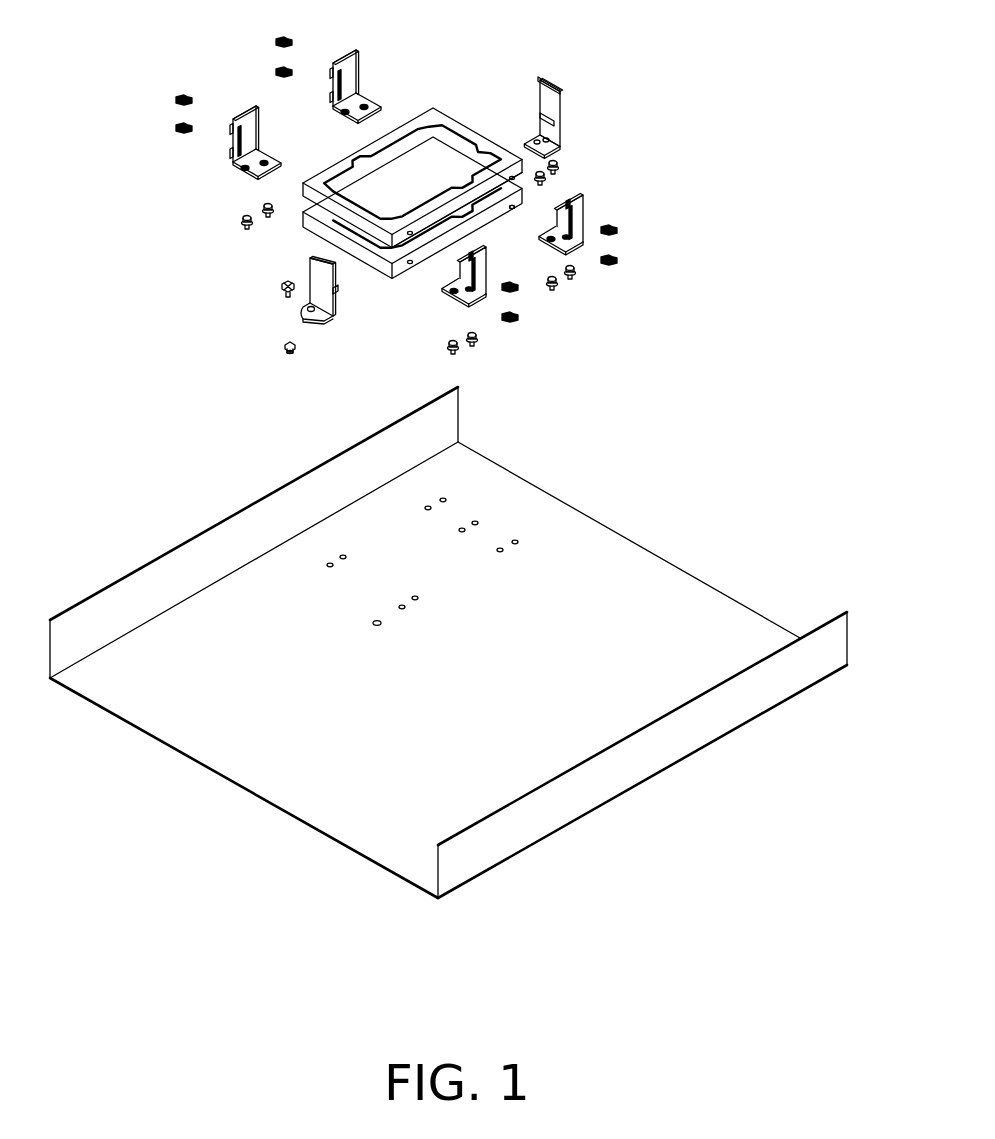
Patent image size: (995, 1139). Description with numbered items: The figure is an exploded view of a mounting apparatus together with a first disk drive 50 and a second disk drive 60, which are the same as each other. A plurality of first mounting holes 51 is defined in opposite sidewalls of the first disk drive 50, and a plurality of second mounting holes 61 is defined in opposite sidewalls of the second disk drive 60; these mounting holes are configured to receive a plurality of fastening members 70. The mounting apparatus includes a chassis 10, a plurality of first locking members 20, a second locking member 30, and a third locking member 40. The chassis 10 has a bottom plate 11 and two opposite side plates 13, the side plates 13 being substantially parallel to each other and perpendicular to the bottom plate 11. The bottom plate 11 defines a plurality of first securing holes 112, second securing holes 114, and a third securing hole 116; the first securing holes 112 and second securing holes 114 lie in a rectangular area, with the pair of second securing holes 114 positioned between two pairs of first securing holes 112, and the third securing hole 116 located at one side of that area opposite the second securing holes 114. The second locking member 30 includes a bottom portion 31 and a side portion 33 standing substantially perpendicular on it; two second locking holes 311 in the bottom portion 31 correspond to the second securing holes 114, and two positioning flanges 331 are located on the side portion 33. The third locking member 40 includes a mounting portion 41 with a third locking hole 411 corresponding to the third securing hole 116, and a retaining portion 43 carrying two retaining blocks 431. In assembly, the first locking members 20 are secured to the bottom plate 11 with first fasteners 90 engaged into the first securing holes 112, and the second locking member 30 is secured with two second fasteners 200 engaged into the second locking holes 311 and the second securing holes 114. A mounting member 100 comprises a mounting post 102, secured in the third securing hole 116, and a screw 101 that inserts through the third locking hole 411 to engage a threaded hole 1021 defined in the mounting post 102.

The chassis 10 is at (448, 642).
The bottom plate 11 is at (667, 607).
The first securing holes 112 is at (343, 557).
The second securing holes 114 is at (475, 523).
The third securing hole 116 is at (377, 623).
The side plates 13 is at (362, 472).
The first locking members 20 is at (355, 85).
The second locking member 30 is at (572, 88).
The bottom portion 31 is at (565, 115).
The second locking holes 311 is at (530, 138).
The side portion 33 is at (555, 108).
The positioning flanges 331 is at (553, 82).
The third locking member 40 is at (315, 302).
The mounting portion 41 is at (350, 333).
The third locking hole 411 is at (326, 318).
The retaining portion 43 is at (314, 278).
The retaining blocks 431 is at (318, 257).
The first disk drive 50 is at (512, 190).
The first mounting holes 51 is at (513, 207).
The second disk drive 60 is at (430, 140).
The second mounting holes 61 is at (508, 150).
The fastening members 70 is at (276, 70).
The first fasteners 90 is at (242, 221).
The mounting member 100 is at (227, 327).
The screw 101 is at (286, 289).
The mounting post 102 is at (286, 345).
The threaded hole 1021 is at (287, 352).
The second fasteners 200 is at (548, 176).